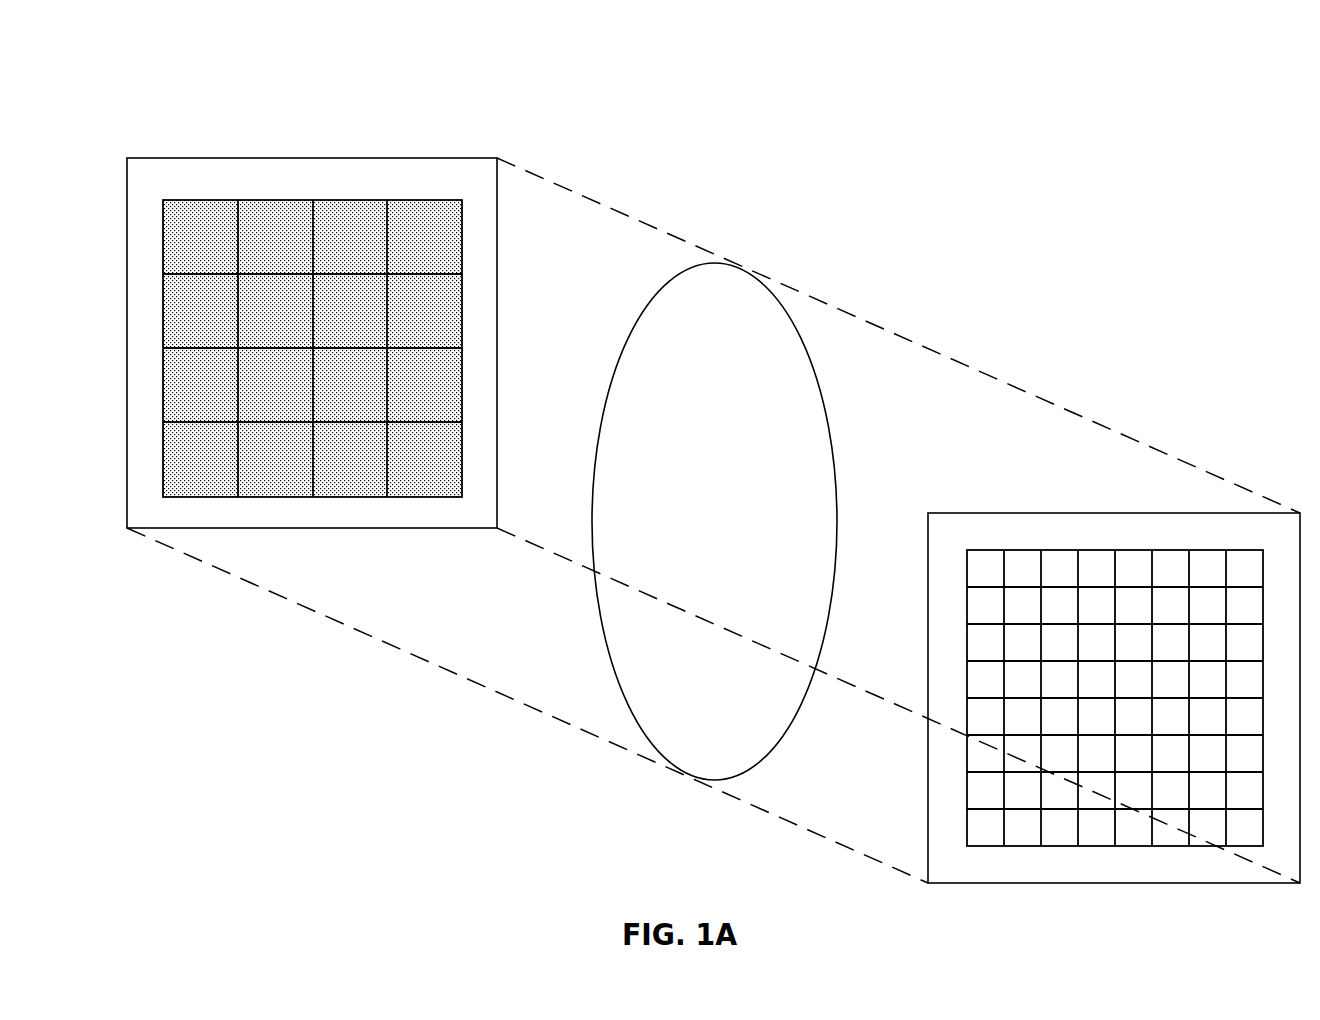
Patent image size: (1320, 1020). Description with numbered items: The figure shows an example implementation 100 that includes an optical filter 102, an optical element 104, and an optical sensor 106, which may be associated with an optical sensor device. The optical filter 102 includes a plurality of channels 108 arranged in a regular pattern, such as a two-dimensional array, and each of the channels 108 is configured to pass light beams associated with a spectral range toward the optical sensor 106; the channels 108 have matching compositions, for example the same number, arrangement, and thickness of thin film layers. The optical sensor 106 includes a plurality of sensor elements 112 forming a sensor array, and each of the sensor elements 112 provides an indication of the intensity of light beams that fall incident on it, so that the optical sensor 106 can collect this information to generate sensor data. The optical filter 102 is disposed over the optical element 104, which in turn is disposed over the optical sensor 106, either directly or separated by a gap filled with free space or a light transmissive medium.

The example implementation 100 is at (188, 52).
The optical filter 102 is at (400, 193).
The optical element 104 is at (733, 561).
The optical sensor 106 is at (1212, 545).
The channels 108 is at (276, 380).
The sensor elements 112 is at (1028, 834).